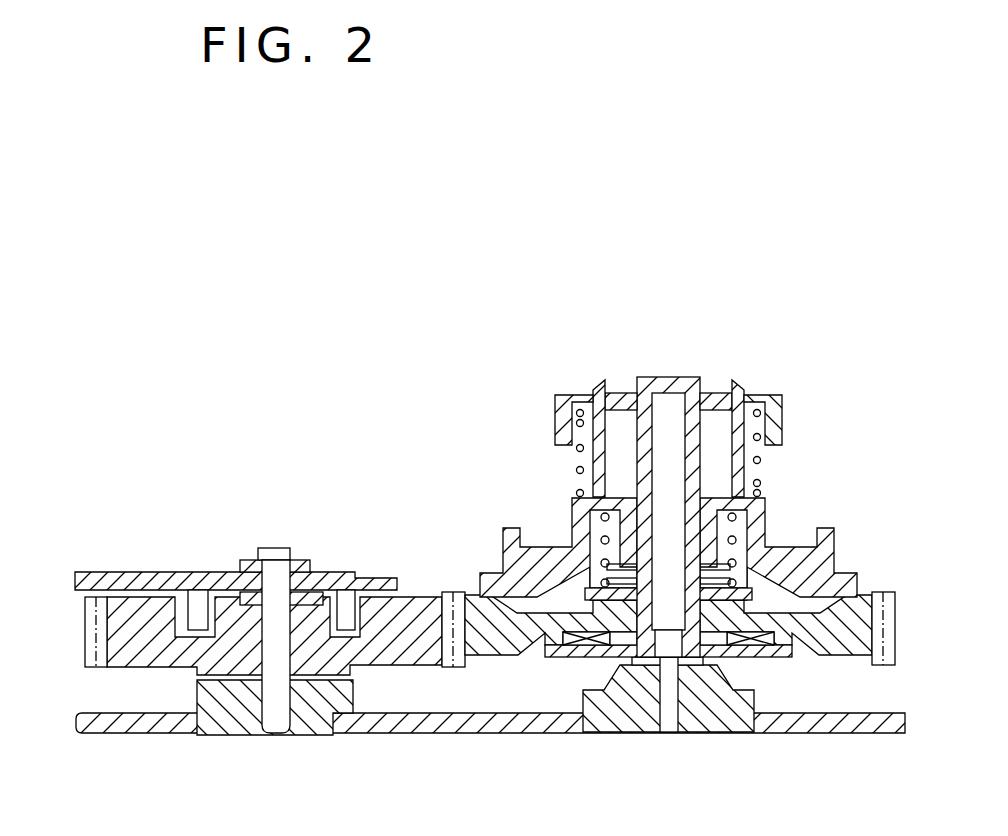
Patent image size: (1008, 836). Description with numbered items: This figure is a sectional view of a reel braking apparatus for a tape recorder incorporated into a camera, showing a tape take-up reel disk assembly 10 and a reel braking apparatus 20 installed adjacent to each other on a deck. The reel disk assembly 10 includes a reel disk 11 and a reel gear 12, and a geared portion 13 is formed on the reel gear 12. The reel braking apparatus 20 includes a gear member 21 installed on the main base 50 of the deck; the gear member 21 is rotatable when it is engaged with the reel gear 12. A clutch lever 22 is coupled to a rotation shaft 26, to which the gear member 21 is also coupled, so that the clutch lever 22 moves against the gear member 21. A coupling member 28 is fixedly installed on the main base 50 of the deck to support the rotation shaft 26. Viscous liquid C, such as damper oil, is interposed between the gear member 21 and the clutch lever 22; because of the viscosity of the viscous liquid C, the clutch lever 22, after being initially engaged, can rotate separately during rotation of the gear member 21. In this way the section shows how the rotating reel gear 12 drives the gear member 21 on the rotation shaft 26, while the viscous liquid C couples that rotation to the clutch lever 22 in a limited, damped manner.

The tape take-up reel disk assembly 10 is at (680, 556).
The reel disk 11 is at (503, 528).
The reel gear 12 is at (495, 652).
The geared portion 13 is at (886, 592).
The reel braking apparatus 20 is at (243, 622).
The gear member 21 is at (115, 631).
The clutch lever 22 is at (135, 572).
The rotation shaft 26 is at (275, 725).
The coupling member 28 is at (240, 735).
The main base 50 is at (812, 733).
The viscous liquid C is at (350, 630).